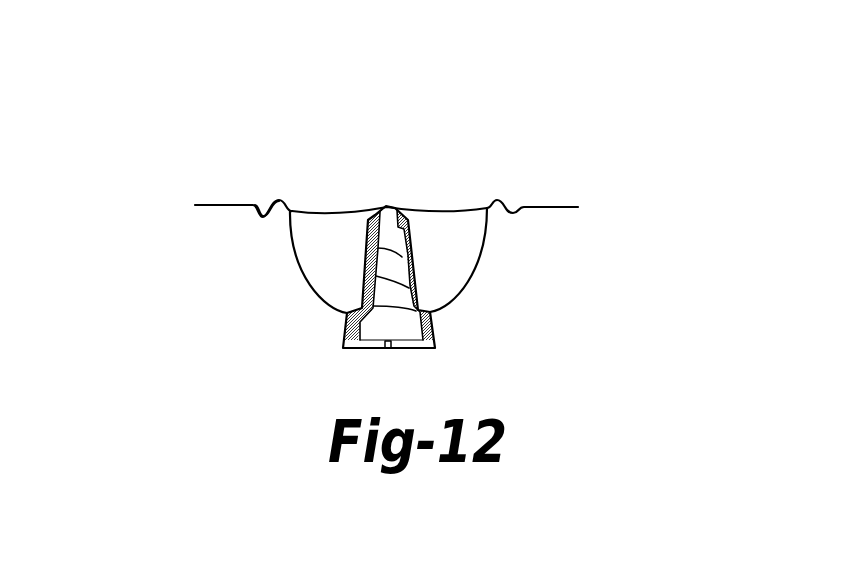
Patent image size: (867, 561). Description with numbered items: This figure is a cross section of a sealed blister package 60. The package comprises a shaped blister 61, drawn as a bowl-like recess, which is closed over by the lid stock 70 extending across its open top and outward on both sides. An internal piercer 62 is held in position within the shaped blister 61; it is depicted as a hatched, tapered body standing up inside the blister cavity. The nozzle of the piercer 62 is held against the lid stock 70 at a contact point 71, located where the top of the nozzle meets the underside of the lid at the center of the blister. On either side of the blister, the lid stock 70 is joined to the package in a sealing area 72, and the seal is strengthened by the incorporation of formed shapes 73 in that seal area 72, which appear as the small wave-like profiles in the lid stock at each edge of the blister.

The sealed blister package 60 is at (277, 305).
The shaped blister 61 is at (470, 280).
The internal piercer 62 is at (401, 258).
The lid stock 70 is at (325, 212).
The contact point 71 is at (387, 207).
The sealing area 72 is at (262, 190).
The formed shapes 73 is at (267, 213).